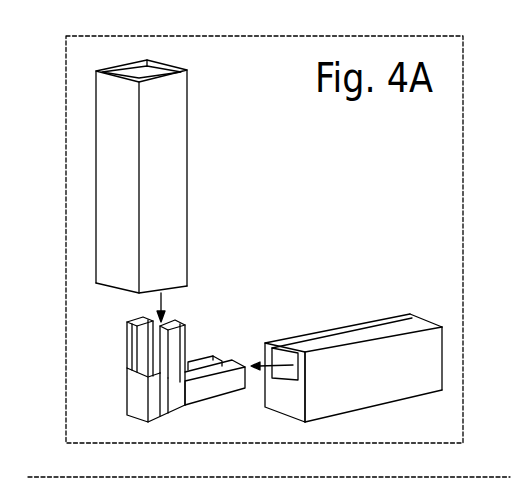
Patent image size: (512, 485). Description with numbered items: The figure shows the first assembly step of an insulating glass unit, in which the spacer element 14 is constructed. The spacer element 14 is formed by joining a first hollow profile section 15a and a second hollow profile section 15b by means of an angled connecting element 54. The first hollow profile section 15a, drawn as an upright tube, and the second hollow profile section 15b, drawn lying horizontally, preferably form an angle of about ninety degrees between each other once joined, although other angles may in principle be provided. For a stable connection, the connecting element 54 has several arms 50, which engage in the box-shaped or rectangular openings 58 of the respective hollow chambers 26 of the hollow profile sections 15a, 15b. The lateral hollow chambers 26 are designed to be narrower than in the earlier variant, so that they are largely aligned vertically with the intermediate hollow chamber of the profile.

The spacer element 14 is at (269, 241).
The first hollow profile section 15a is at (170, 180).
The second hollow profile section 15b is at (378, 350).
The hollow chamber 26 is at (305, 340).
The arm 50 is at (181, 343).
The angled connecting element 54 is at (142, 400).
The opening 58 is at (318, 383).